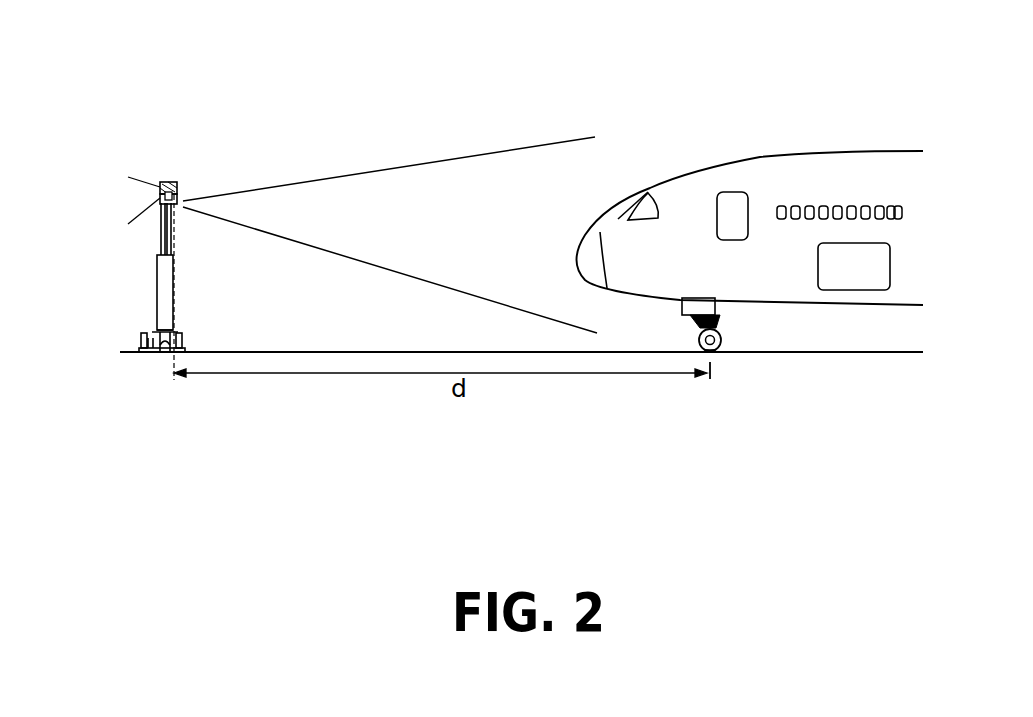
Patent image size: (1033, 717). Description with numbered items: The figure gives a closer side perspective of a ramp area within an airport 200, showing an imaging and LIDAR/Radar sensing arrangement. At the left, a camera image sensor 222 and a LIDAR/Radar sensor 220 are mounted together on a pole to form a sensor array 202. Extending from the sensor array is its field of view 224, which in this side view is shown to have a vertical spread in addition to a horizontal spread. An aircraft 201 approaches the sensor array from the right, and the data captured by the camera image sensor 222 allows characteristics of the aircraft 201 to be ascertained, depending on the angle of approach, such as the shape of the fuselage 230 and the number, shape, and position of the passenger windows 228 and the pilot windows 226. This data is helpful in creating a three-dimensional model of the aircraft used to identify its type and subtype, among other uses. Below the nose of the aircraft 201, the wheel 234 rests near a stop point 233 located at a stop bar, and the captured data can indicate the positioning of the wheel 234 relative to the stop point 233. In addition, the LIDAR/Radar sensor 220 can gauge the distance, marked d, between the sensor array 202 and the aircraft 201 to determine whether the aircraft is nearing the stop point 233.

The airport 200 is at (840, 490).
The aircraft 201 is at (778, 118).
The sensor array 202 is at (147, 148).
The LIDAR/Radar sensor 220 is at (171, 182).
The camera image sensor 222 is at (182, 188).
The field of view 224 is at (444, 160).
The pilot windows 226 is at (650, 188).
The passenger windows 228 is at (875, 205).
The fuselage 230 is at (847, 306).
The stop point 233 is at (707, 366).
The wheel 234 is at (722, 340).